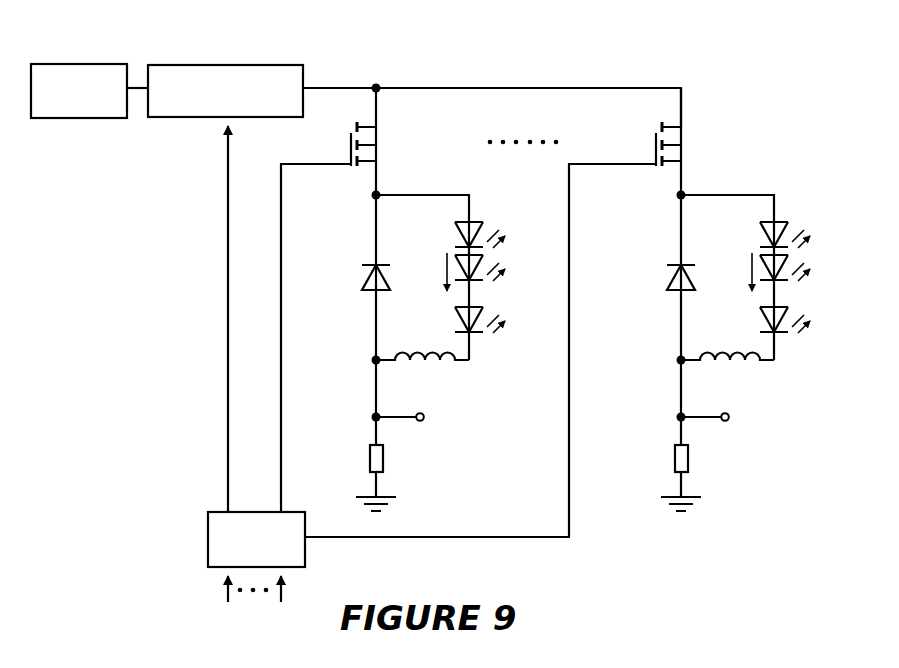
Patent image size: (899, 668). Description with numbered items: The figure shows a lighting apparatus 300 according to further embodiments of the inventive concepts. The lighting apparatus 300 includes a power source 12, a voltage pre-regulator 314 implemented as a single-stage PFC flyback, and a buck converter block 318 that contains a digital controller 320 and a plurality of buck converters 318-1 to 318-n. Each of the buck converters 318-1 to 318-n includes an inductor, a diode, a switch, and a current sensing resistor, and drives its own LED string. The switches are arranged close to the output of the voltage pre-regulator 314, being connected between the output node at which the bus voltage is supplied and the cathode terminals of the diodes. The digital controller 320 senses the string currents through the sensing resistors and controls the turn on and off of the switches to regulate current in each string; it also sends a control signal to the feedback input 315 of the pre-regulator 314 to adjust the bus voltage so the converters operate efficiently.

The power source 12 is at (80, 64).
The voltage pre-regulator 314 is at (228, 64).
The feedback input 315 is at (224, 119).
The buck converter block 318 is at (538, 68).
The buck converter 318-1 is at (440, 368).
The buck converter 318-n is at (745, 368).
The digital controller 320 is at (208, 537).
The lighting apparatus 300 is at (697, 51).